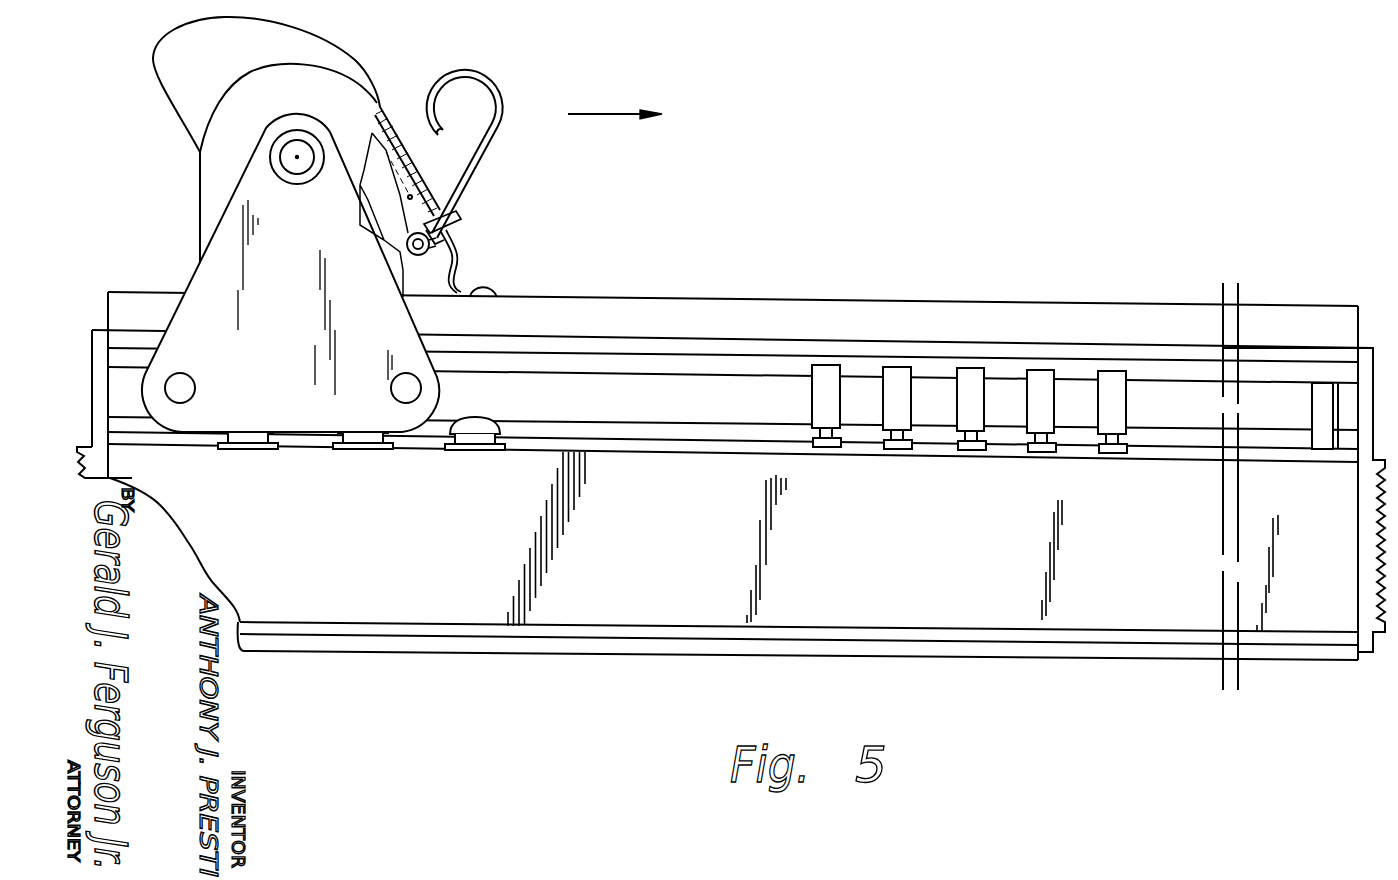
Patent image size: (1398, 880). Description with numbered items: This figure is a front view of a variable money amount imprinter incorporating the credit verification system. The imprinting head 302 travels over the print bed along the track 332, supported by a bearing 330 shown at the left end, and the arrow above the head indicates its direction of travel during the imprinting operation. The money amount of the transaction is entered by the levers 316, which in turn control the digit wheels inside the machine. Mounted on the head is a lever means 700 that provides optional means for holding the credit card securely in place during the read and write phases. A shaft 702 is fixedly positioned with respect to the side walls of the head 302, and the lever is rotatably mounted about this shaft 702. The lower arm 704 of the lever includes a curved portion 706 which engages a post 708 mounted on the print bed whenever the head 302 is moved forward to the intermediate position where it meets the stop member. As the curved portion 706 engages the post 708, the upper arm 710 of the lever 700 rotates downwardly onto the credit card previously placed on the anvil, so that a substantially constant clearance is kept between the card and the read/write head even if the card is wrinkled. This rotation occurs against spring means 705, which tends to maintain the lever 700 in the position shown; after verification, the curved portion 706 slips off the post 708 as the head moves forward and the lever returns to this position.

The imprinting head 302 is at (347, 60).
The levers 316 is at (1052, 339).
The bearing 330 is at (108, 359).
The track 332 is at (678, 417).
The lever means 700 is at (572, 189).
The shaft 702 is at (460, 233).
The lower arm 704 is at (461, 263).
The spring means 705 is at (463, 248).
The curved portion 706 is at (470, 276).
The post 708 is at (513, 298).
The upper arm 710 is at (503, 138).